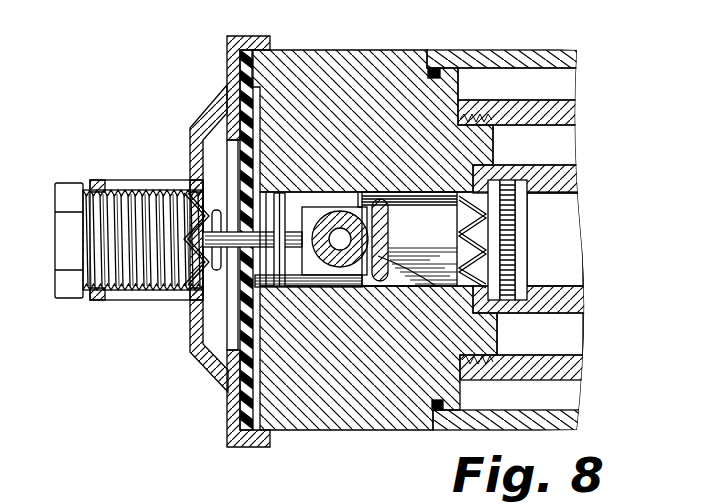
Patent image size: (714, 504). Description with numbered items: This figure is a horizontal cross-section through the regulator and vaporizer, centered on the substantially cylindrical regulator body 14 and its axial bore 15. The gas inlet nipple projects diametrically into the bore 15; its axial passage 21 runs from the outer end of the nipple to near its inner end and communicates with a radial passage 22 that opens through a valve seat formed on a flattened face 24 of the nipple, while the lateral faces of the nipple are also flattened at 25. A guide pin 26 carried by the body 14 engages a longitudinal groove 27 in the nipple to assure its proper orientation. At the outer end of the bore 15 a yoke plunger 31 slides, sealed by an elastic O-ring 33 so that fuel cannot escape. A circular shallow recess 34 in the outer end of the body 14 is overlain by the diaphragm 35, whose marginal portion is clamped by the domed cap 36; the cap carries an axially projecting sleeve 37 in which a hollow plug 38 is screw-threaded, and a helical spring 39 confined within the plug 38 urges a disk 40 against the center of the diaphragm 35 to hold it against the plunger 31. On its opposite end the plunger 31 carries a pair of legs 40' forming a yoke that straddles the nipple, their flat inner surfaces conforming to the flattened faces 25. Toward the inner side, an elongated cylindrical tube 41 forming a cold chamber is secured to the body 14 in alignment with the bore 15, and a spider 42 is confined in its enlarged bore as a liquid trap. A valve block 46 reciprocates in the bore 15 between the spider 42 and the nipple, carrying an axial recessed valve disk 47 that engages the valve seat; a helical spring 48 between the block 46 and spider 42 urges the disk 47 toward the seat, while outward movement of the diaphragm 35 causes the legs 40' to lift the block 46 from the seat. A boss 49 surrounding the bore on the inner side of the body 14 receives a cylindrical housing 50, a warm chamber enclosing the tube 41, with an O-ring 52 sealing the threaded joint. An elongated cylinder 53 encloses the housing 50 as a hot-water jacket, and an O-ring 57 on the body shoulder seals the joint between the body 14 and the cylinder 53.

The regulator body 14 is at (342, 58).
The axial bore 15 is at (436, 190).
The axial passage 21 is at (307, 200).
The radial passage 22 is at (341, 246).
The flattened face 24 is at (375, 228).
The flattened lateral faces 25 is at (400, 125).
The guide pin 26 is at (238, 345).
The groove 27 is at (304, 196).
The yoke plunger 31 is at (193, 315).
The O-ring 33 is at (232, 332).
The shallow recess 34 is at (237, 407).
The diaphragm 35 is at (228, 40).
The domed cap 36 is at (242, 70).
The sleeve 37 is at (140, 292).
The hollow plug 38 is at (118, 178).
The helical spring 39 is at (170, 183).
The disk 40 is at (192, 231).
The yoke legs 40' is at (194, 238).
The cylindrical tube 41 is at (557, 276).
The spider 42 is at (520, 218).
The valve block 46 is at (505, 253).
The valve disk 47 is at (497, 327).
The helical spring 48 is at (492, 172).
The boss 49 is at (493, 120).
The cylindrical housing 50 is at (567, 110).
The O-ring 52 is at (466, 362).
The cylinder 53 is at (533, 53).
The O-ring 57 is at (433, 430).